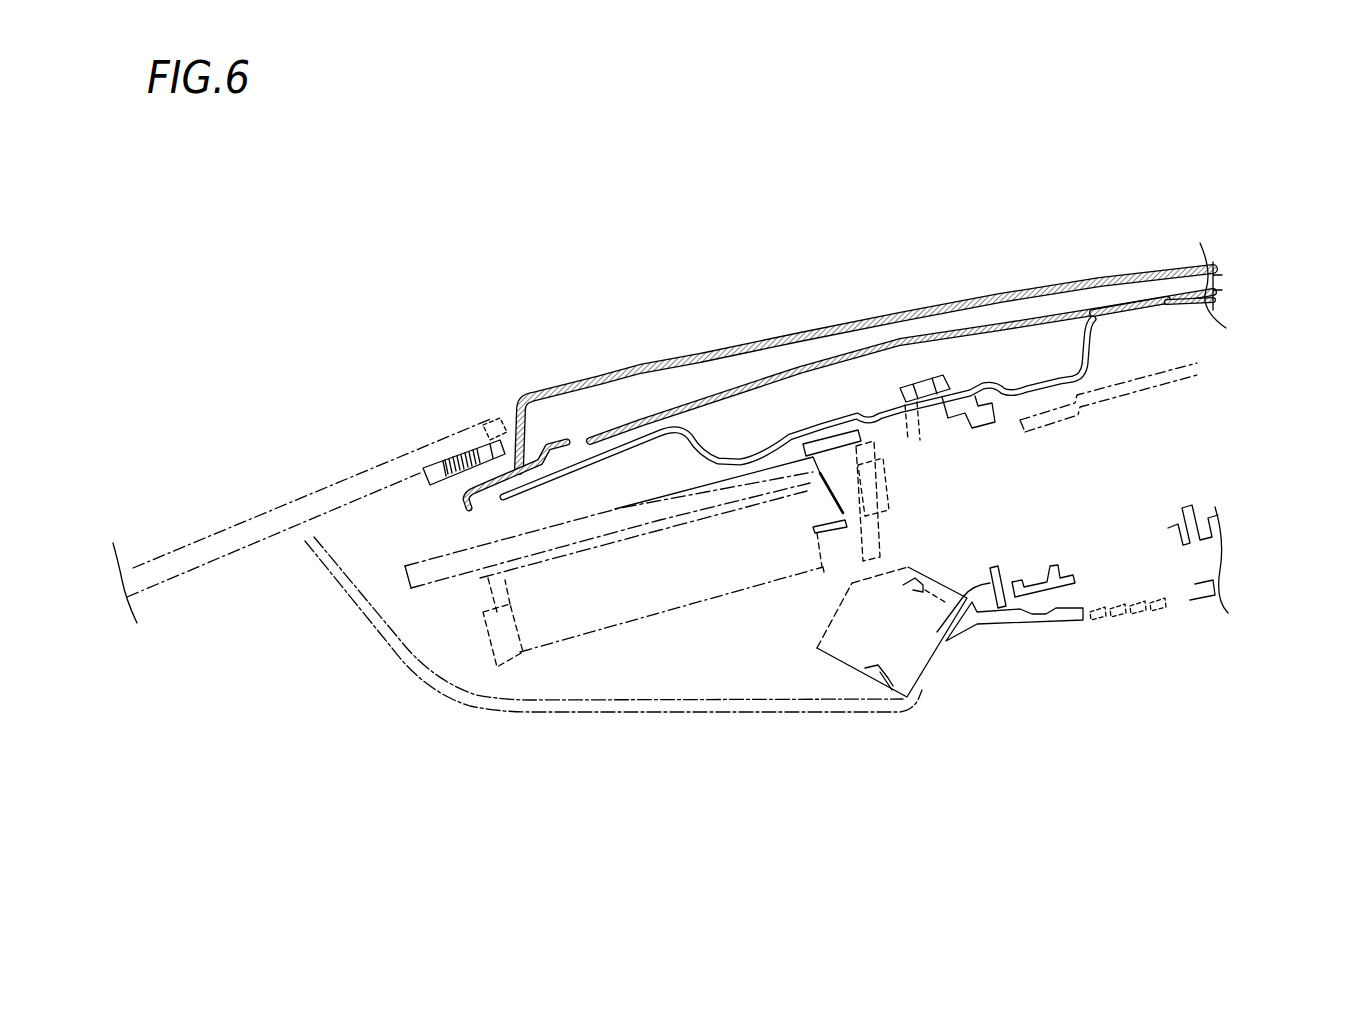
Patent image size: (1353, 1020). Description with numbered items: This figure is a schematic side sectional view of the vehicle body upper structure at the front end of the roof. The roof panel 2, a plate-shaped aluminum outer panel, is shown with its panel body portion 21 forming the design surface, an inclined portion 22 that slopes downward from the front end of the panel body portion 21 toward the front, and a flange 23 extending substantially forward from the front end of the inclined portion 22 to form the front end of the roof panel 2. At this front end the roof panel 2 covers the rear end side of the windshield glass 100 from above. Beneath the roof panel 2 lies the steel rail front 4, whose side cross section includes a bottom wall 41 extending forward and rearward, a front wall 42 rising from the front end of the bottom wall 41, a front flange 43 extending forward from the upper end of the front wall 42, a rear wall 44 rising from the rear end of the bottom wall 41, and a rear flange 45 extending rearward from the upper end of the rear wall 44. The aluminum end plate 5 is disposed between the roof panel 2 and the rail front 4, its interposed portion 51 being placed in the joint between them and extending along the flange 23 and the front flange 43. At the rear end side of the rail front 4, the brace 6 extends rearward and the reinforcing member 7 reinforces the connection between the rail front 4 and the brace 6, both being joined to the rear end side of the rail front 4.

The roof panel 2 is at (826, 328).
The panel body portion 21 is at (713, 356).
The inclined portion 22 is at (512, 425).
The flange 23 is at (497, 445).
The windshield glass 100 is at (295, 497).
The reinforcing member 7 is at (1060, 307).
The brace 6 is at (1198, 260).
The rear flange 45 is at (1157, 313).
The rear wall 44 is at (1100, 343).
The rail front 4 is at (1020, 390).
The bottom wall 41 is at (890, 436).
The front wall 42 is at (685, 432).
The front flange 43 is at (582, 462).
The end plate 5 is at (480, 500).
The interposed portion 51 is at (524, 466).